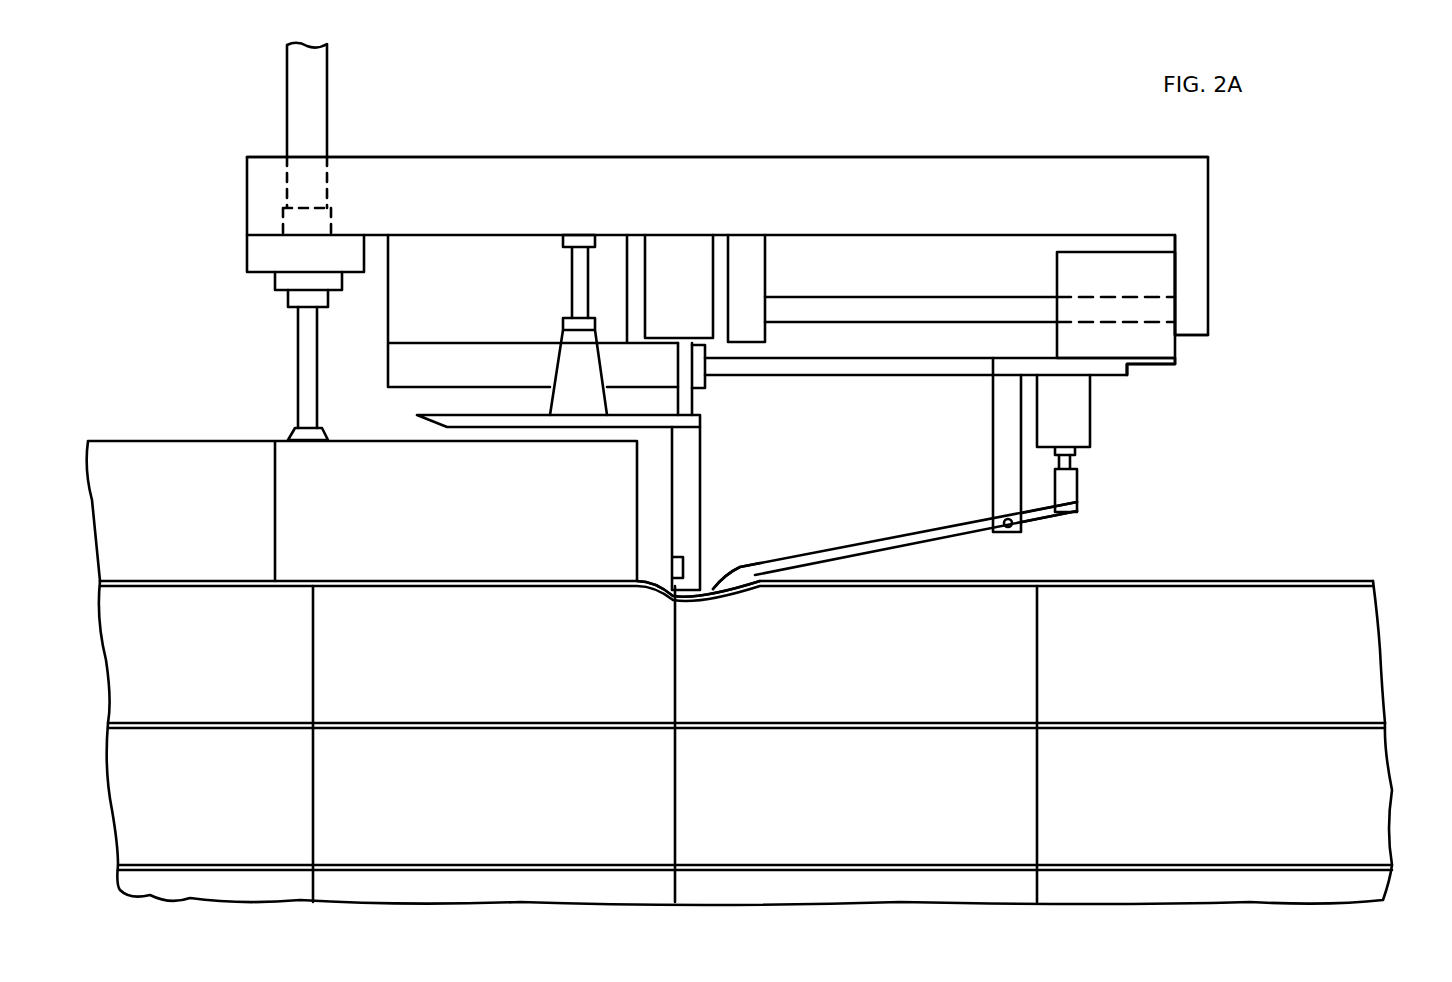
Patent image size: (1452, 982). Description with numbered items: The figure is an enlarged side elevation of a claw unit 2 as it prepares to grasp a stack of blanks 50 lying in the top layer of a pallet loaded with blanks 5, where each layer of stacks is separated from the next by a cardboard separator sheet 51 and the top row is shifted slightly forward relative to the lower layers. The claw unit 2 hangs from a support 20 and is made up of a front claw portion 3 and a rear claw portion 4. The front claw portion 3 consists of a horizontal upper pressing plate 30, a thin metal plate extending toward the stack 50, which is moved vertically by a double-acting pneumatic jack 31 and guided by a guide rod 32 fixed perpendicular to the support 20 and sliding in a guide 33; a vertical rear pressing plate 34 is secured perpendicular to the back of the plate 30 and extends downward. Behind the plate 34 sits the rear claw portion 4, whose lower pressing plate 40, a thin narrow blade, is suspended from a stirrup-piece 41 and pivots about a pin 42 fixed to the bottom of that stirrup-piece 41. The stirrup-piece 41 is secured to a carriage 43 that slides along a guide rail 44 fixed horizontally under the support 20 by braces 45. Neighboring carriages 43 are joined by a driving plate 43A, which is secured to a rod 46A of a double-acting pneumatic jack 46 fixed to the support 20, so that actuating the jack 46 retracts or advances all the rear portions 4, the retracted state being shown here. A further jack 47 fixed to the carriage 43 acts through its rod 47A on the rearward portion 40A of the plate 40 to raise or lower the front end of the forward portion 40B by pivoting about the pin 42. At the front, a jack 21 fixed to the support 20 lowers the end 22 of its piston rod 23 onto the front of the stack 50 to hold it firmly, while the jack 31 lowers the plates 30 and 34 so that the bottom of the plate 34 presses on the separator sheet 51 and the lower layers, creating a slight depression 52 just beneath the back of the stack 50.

The claw unit 2 is at (760, 157).
The front claw portion 3 is at (625, 412).
The rear claw portion 4 is at (1137, 369).
The pallet loaded with blanks 5 is at (1340, 650).
The support 20 is at (1067, 170).
The double-acting pneumatic jack 21 is at (308, 92).
The end of the piston rod 22 is at (298, 436).
The piston rod 23 is at (305, 365).
The upper pressing plate 30 is at (483, 417).
The double-acting pneumatic jack 31 is at (693, 321).
The guide rod 32 is at (572, 307).
The guide 33 is at (568, 375).
The rear pressing plate 34 is at (693, 480).
The lower pressing plate 40 is at (883, 547).
The rearward portion of the lower pressing plate 40A is at (1077, 513).
The forward portion of the lower pressing plate 40B is at (738, 577).
The stirrup-piece 41 is at (1005, 433).
The pin 42 is at (1008, 528).
The carriage 43 is at (1155, 282).
The driving plate 43A is at (1107, 368).
The guide rail 44 is at (1012, 315).
The braces 45 is at (747, 272).
The double-acting pneumatic jack 46 is at (413, 357).
The rod 46A is at (835, 365).
The double-acting pneumatic jack 47 is at (1077, 418).
The rod 47A is at (1077, 462).
The stack of blanks 50 is at (476, 519).
The cardboard separator sheet 51 is at (1256, 578).
The depression 52 is at (658, 577).